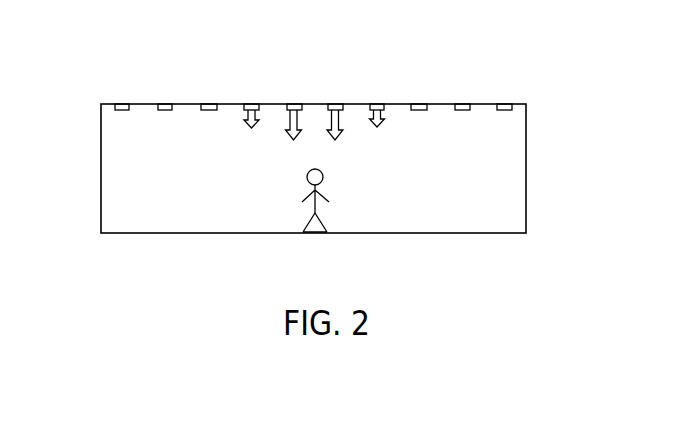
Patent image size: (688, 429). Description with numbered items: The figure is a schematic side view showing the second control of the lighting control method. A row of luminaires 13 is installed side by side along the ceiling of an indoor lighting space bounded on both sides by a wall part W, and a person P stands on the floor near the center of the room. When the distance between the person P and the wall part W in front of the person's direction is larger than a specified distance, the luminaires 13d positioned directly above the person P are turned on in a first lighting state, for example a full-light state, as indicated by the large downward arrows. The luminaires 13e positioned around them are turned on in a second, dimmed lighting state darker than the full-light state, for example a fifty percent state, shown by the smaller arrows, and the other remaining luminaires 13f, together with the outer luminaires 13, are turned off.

The luminaire 13 is at (166, 104).
The luminaire positioned above the person 13d is at (338, 103).
The luminaire positioned around the person 13e is at (252, 104).
The remaining luminaire 13f is at (208, 104).
The wall part W is at (101, 144).
The person P is at (326, 226).